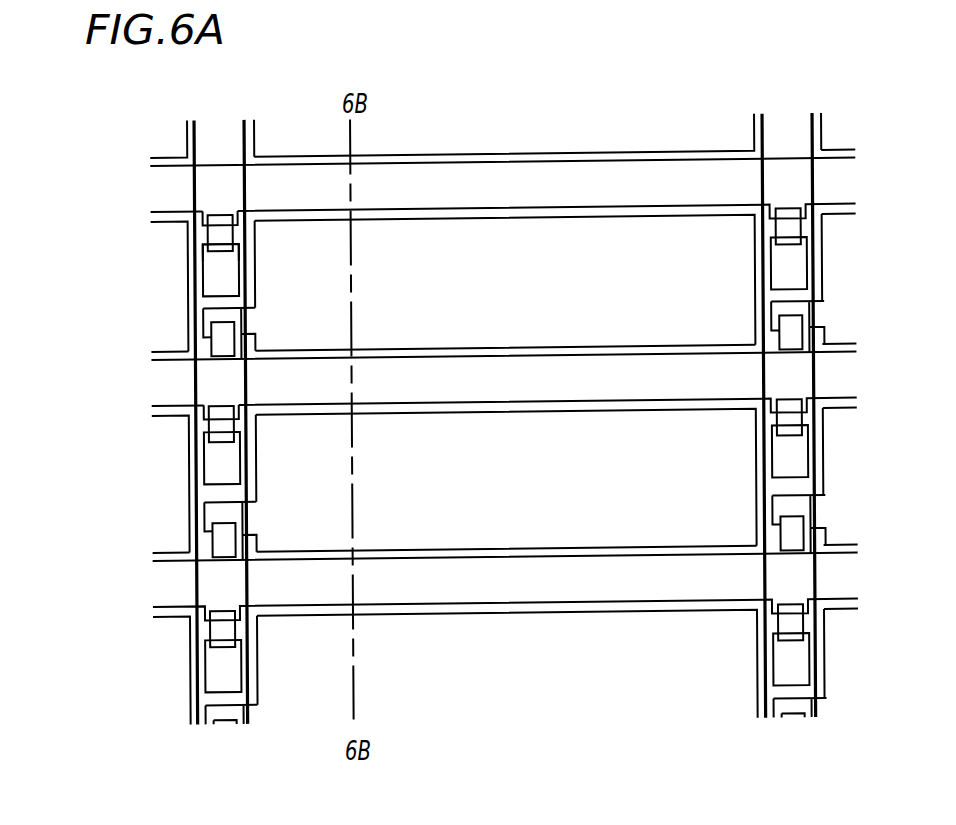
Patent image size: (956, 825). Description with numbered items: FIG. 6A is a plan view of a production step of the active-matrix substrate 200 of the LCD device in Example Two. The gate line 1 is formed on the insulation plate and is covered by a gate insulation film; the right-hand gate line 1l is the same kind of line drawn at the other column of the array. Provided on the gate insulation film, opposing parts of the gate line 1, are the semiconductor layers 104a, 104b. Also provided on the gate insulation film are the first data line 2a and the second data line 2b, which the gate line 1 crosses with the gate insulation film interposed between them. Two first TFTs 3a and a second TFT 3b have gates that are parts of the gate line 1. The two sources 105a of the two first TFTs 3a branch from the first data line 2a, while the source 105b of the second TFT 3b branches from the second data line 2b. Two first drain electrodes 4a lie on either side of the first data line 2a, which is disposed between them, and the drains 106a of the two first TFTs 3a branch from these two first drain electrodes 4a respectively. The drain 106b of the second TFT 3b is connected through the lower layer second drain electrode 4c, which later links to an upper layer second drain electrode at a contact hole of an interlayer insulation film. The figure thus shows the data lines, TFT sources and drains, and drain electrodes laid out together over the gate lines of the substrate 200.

The active-matrix substrate 200 is at (709, 76).
The gate line 1 is at (227, 130).
The signal line 1l is at (785, 137).
The first data line 2a is at (173, 383).
The second data line 2b is at (158, 172).
The first TFT 3a is at (218, 342).
The second TFT 3b is at (58, 163).
The first drain electrode 4a is at (505, 448).
The lower layer second drain electrode 4c is at (213, 287).
The semiconductor layer 104a is at (222, 422).
The semiconductor layer 104b is at (218, 235).
The source 105a is at (220, 403).
The source 105b is at (218, 214).
The drain 106a is at (212, 445).
The drain 106b is at (212, 258).